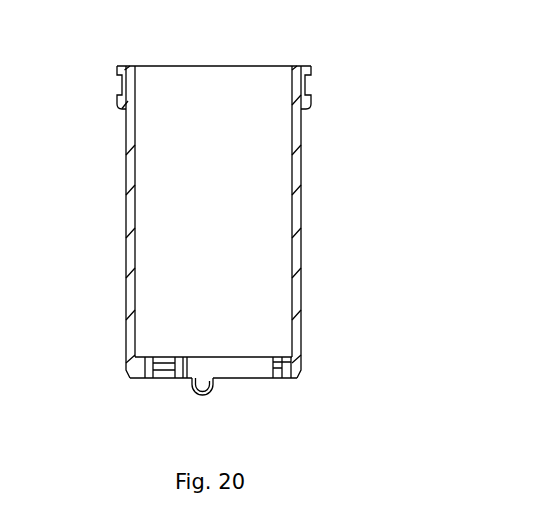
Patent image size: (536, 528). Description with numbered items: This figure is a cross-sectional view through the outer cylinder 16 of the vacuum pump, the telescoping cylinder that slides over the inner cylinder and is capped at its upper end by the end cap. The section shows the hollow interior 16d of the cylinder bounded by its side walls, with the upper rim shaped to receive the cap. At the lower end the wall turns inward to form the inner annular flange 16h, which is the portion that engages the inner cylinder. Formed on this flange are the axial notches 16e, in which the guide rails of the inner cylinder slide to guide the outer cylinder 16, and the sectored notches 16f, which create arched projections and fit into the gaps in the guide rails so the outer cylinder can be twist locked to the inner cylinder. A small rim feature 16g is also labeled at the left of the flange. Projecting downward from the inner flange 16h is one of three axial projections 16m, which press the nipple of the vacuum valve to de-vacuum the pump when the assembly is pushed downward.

The outer cylinder 16 is at (371, 126).
The interior cavity 16d is at (235, 219).
The axial notch 16e is at (181, 372).
The sectored notch 16f is at (163, 362).
The base rim 16g is at (167, 373).
The inner annular flange 16h is at (289, 366).
The axial projection 16m is at (212, 395).